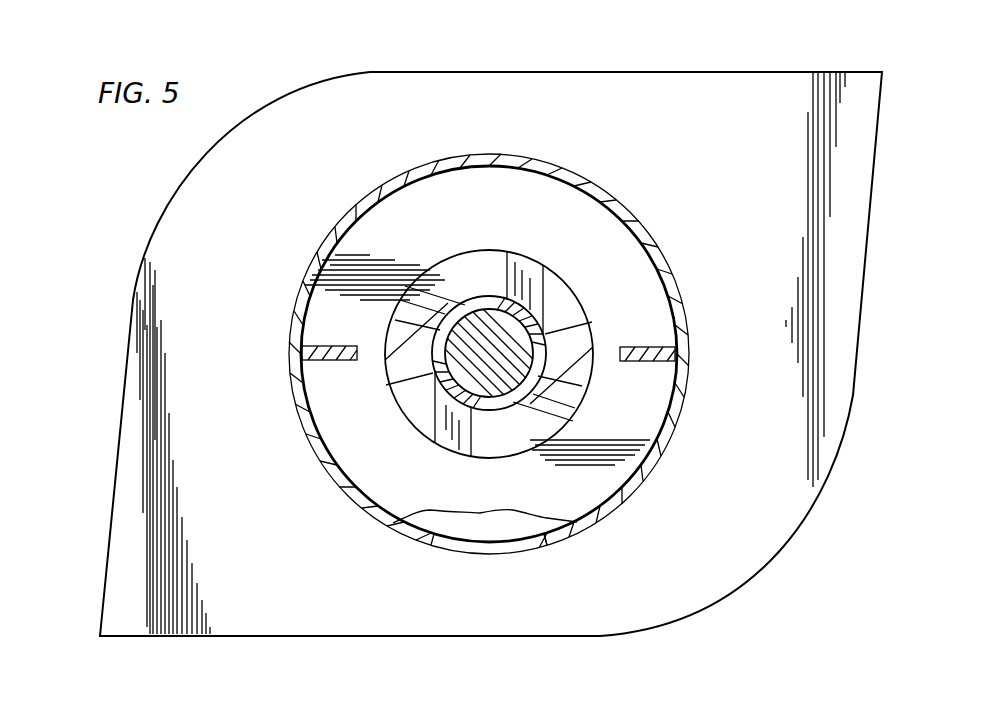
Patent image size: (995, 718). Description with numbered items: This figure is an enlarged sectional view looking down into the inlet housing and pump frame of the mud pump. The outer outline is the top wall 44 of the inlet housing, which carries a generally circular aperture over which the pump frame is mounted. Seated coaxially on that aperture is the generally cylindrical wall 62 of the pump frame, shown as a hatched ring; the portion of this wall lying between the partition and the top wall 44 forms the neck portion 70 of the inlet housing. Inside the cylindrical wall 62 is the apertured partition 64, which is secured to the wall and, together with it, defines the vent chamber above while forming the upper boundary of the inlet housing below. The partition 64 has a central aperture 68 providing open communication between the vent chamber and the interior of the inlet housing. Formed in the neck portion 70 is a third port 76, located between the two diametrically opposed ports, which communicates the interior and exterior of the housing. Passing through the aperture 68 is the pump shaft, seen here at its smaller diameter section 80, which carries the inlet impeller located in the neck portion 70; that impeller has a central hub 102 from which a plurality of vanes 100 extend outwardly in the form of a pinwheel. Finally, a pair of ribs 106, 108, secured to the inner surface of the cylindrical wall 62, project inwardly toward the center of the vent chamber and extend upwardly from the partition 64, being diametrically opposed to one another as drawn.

The top wall 44 is at (648, 95).
The cylindrical wall 62 is at (471, 160).
The apertured partition 64 is at (385, 213).
The aperture 68 is at (578, 290).
The neck portion 70 is at (413, 540).
The third port 76 is at (533, 543).
The smaller diameter section 80 is at (567, 407).
The vanes 100 is at (537, 278).
The central hub 102 is at (492, 300).
The rib 106 is at (305, 357).
The rib 108 is at (643, 348).